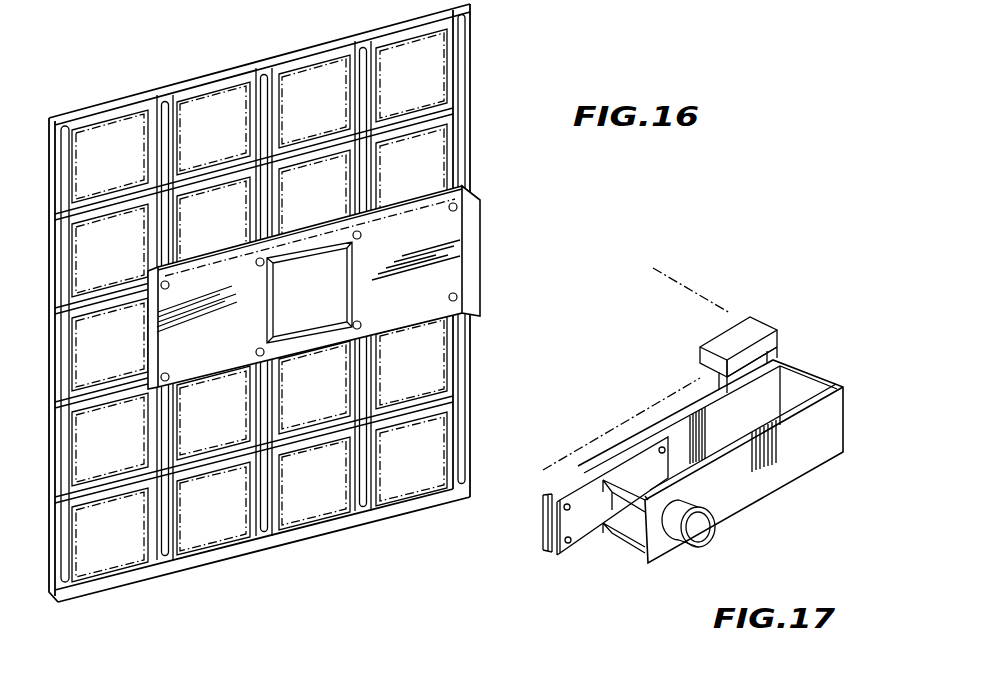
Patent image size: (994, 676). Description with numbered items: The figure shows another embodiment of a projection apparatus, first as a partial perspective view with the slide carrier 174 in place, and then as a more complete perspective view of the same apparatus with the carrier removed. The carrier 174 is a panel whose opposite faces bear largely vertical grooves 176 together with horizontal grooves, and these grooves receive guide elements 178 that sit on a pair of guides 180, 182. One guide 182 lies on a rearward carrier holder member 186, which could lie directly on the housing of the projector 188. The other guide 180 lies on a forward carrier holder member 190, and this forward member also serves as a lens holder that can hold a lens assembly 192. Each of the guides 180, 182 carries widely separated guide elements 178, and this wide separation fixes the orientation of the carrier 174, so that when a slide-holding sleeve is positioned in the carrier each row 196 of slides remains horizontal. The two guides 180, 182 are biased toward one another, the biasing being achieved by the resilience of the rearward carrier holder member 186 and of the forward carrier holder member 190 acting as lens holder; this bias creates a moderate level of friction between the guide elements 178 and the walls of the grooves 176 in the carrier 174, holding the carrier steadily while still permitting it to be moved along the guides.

In FIG. 16, the carrier 174 is at (156, 85).
In FIG. 16, the vertical grooves 176 is at (263, 95).
In FIG. 16, the guide elements 178 is at (200, 178).
In FIG. 16, the row of slides 196 is at (325, 103).
In FIG. 17, the guide 180 is at (557, 553).
In FIG. 17, the guide 182 is at (543, 550).
In FIG. 17, the rearward carrier holder member 186 is at (752, 358).
In FIG. 17, the projector 188 is at (735, 300).
In FIG. 17, the forward carrier holder member 190 is at (775, 478).
In FIG. 17, the lens assembly 192 is at (702, 546).